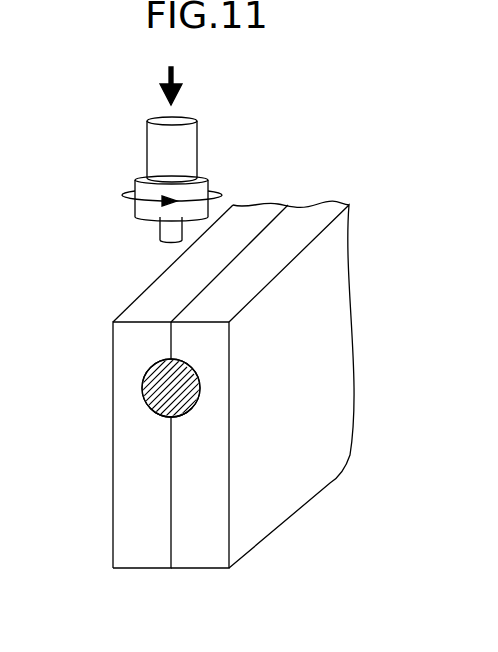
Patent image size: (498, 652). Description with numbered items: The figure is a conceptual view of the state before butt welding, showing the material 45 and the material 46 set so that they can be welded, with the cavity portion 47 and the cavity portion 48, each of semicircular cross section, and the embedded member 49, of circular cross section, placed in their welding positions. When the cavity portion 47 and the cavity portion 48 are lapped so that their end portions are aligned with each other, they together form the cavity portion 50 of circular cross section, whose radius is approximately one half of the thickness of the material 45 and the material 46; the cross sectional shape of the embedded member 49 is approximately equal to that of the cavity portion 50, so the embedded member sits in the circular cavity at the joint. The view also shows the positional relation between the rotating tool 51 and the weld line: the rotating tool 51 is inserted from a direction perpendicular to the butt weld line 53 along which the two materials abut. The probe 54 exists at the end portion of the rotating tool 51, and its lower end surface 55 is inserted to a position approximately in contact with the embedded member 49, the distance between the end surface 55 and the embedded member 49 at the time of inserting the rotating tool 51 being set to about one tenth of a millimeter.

The material 45 is at (142, 548).
The material 46 is at (200, 548).
The cavity portion 47 is at (142, 390).
The cavity portion 48 is at (201, 392).
The embedded member 49 is at (199, 381).
The cavity portion 50 is at (190, 412).
The rotating tool 51 is at (197, 134).
The butt weld line 53 is at (220, 272).
The probe 54 is at (158, 233).
The lower end surface 55 is at (215, 223).